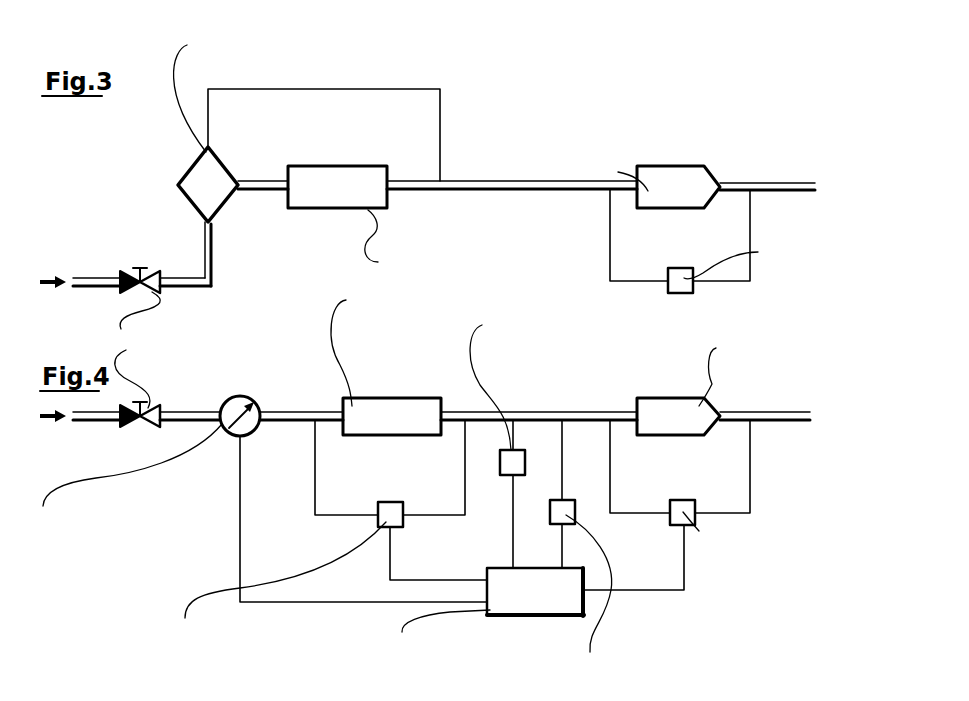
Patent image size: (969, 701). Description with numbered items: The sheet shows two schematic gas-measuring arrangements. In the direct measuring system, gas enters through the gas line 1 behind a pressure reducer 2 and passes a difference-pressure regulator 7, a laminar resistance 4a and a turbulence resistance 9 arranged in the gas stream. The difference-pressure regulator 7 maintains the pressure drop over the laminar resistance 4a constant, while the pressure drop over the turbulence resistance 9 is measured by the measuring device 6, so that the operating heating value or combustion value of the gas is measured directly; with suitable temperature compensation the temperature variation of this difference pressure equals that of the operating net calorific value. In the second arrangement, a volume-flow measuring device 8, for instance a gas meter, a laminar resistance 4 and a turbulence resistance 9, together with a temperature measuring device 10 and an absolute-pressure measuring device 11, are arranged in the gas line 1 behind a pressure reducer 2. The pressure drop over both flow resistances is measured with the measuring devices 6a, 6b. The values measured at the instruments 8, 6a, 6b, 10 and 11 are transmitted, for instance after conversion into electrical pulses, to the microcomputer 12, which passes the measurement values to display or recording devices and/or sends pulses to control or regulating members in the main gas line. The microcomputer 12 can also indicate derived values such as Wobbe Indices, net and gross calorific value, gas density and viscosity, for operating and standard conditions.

In FIG. 3, the gas line 1 is at (89, 278).
In FIG. 4, the gas line 1 is at (89, 412).
In FIG. 3, the pressure reducer 2 is at (159, 279).
In FIG. 4, the pressure reducer 2 is at (161, 413).
In FIG. 4, the laminar resistance 4 is at (398, 399).
In FIG. 3, the laminar resistance 4a is at (346, 211).
In FIG. 3, the measuring device 6 is at (679, 294).
In FIG. 4, the measuring device 6a is at (393, 505).
In FIG. 4, the measuring device 6b is at (686, 503).
In FIG. 3, the difference-pressure regulator 7 is at (193, 165).
In FIG. 4, the volume-flow measuring device 8 is at (250, 404).
In FIG. 3, the turbulence resistance 9 is at (680, 173).
In FIG. 4, the turbulence resistance 9 is at (680, 399).
In FIG. 4, the temperature measuring device 10 is at (506, 478).
In FIG. 4, the absolute-pressure measuring device 11 is at (569, 525).
In FIG. 4, the microcomputer 12 is at (554, 615).